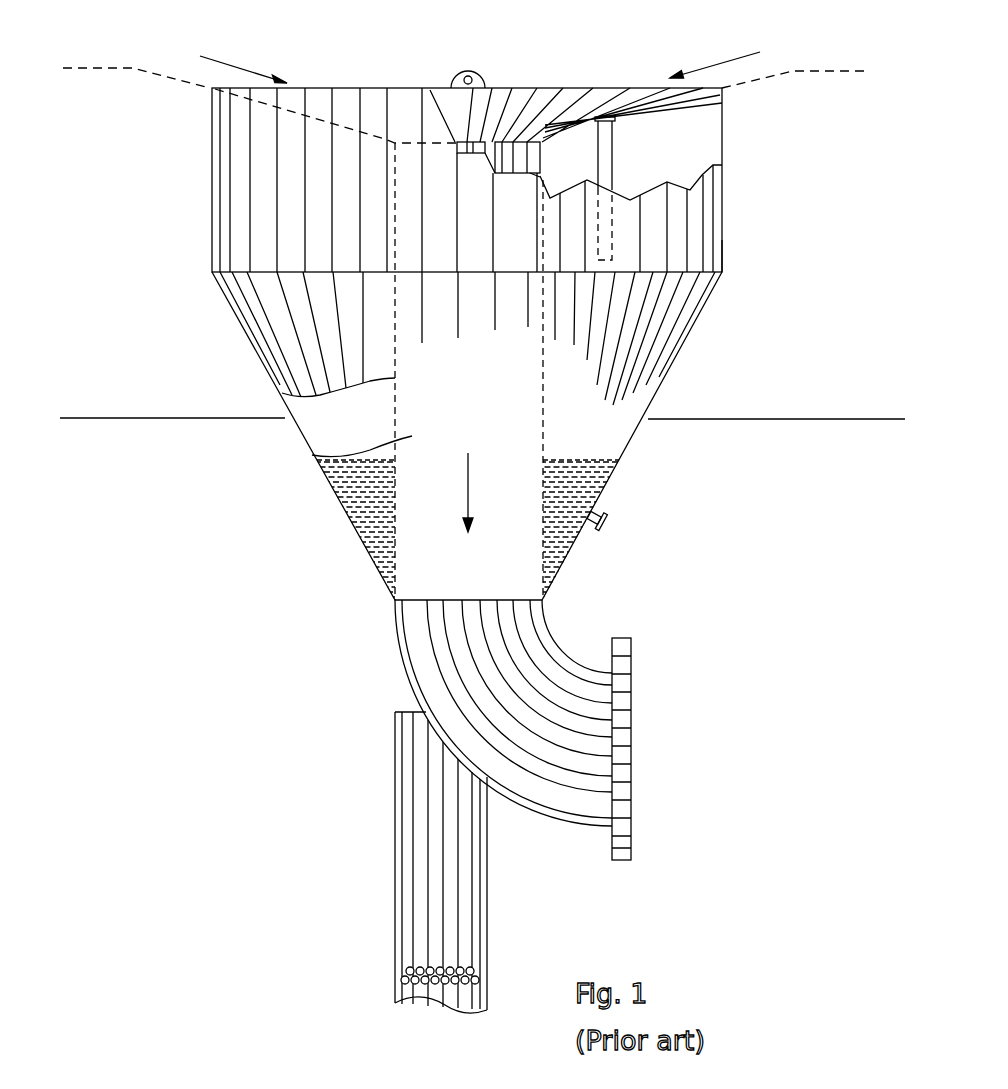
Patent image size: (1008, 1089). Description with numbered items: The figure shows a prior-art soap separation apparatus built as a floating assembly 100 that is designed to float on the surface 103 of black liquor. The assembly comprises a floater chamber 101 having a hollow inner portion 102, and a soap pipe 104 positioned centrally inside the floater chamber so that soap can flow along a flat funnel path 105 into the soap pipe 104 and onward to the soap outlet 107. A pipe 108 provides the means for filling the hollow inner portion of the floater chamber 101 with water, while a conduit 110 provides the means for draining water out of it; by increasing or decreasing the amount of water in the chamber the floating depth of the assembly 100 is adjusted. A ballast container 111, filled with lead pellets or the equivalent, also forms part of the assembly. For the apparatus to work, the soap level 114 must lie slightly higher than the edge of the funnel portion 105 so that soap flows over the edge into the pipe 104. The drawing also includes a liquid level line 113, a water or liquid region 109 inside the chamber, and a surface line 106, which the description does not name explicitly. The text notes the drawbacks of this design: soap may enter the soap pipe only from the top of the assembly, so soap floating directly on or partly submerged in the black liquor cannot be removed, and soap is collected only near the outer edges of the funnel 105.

The floating assembly 100 is at (212, 234).
The floater chamber 101 is at (727, 198).
The hollow inner portion 102 is at (720, 252).
The surface of black liquor 103 is at (476, 72).
The soap pipe 104 is at (282, 393).
The flat funnel path 105 is at (291, 107).
The settled material surface 106 is at (312, 455).
The soap outlet 107 is at (633, 640).
The pipe 108 is at (612, 147).
The water level 109 is at (612, 470).
The conduit 110 is at (610, 515).
The ballast container 111 is at (392, 975).
The ground / water surface line 113 is at (770, 419).
The soap level 114 is at (832, 69).